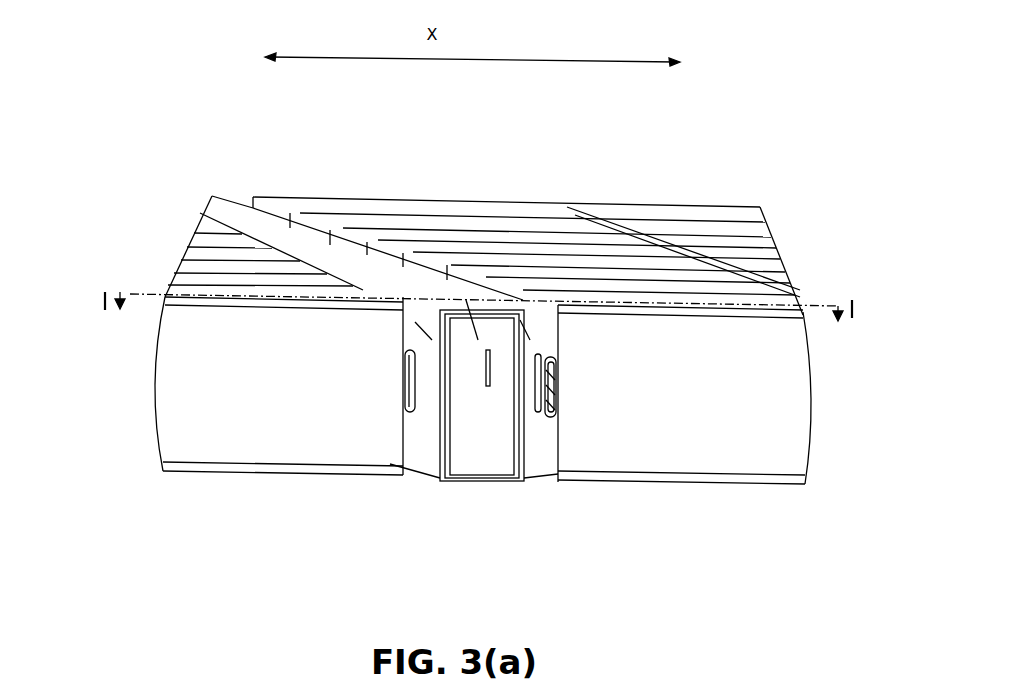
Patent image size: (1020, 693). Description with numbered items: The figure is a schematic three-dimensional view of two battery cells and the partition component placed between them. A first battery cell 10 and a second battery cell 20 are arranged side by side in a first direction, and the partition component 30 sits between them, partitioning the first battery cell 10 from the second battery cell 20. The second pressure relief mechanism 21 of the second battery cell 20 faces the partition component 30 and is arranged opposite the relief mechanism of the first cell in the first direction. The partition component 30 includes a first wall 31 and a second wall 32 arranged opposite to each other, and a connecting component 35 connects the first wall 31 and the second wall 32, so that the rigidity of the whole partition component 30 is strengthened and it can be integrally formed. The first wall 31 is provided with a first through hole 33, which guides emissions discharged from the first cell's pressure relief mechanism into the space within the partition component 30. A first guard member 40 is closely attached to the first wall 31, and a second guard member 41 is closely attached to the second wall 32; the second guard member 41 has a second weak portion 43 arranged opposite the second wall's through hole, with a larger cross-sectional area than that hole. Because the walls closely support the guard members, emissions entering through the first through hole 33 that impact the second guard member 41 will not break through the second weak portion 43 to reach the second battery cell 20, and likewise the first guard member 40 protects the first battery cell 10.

The first battery cell 10 is at (193, 437).
The second battery cell 20 is at (768, 457).
The second pressure relief mechanism 21 is at (540, 397).
The partition component 30 is at (565, 140).
The first wall 31 is at (425, 333).
The second wall 32 is at (525, 330).
The first through hole 33 is at (402, 410).
The connecting component 35 is at (472, 307).
The first guard member 40 is at (480, 330).
The second guard member 41 is at (538, 410).
The second weak portion 43 is at (478, 385).